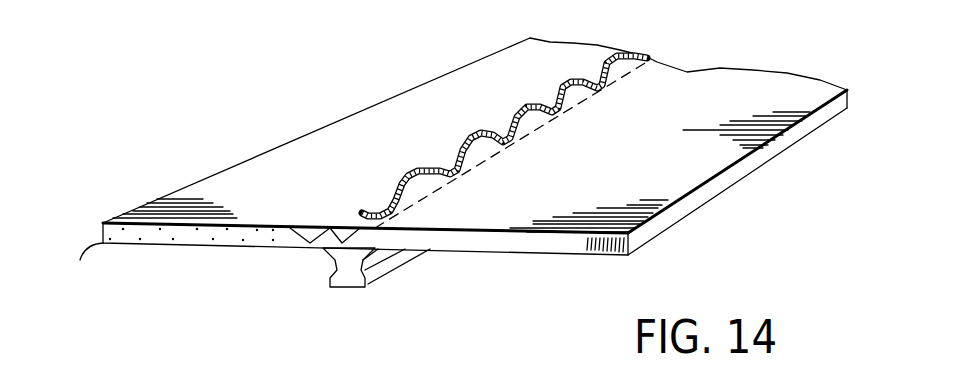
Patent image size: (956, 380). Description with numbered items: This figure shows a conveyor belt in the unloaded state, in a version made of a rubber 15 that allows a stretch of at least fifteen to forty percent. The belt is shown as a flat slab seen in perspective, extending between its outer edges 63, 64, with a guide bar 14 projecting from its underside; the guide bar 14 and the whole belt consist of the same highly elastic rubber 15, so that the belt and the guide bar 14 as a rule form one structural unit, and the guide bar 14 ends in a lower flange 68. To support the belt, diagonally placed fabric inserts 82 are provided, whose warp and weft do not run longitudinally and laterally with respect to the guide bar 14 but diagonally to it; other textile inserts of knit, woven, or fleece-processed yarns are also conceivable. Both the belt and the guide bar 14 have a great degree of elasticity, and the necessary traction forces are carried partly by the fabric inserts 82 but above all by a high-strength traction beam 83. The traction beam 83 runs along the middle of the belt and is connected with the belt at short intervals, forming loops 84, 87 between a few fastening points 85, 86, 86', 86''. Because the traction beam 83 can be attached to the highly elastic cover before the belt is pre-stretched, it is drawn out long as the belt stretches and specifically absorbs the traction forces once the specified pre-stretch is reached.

The guide bar 14 is at (335, 270).
The rubber 15 is at (263, 237).
The outer edge 63 is at (753, 163).
The outer edge 64 is at (96, 263).
The lower flange 68 is at (367, 283).
The fabric inserts 82 is at (193, 227).
The traction beam 83 is at (417, 170).
The loop 84 is at (473, 130).
The fastening point 85 is at (403, 210).
The fastening point 86 is at (514, 161).
The bead segment 86' is at (571, 138).
The bead segment 86'' is at (534, 84).
The loop 87 is at (587, 78).